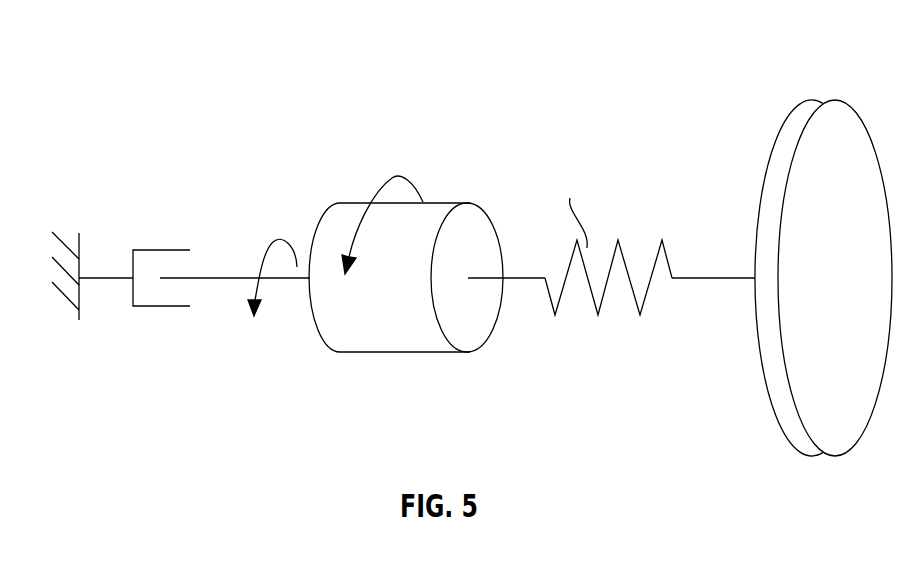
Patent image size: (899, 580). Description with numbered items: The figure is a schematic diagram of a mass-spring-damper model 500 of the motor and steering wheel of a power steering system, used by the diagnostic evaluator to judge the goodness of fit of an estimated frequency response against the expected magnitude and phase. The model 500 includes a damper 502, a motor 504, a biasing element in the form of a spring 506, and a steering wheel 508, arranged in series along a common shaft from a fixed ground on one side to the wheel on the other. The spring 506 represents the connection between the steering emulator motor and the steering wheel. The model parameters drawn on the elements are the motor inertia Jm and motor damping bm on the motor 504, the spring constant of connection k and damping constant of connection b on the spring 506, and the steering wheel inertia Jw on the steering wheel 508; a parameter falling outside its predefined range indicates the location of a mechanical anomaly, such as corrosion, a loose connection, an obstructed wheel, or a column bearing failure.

The mass-spring-damper model 500 is at (758, 38).
The damper 502 is at (155, 307).
The motor 504 is at (390, 353).
The spring 506 is at (592, 303).
The steering wheel 508 is at (857, 292).